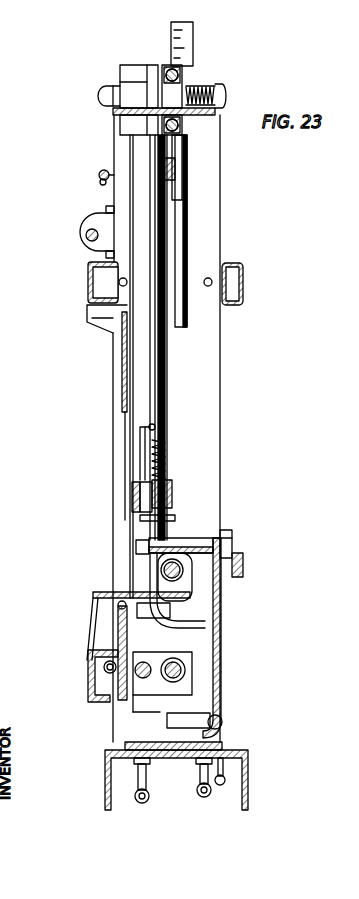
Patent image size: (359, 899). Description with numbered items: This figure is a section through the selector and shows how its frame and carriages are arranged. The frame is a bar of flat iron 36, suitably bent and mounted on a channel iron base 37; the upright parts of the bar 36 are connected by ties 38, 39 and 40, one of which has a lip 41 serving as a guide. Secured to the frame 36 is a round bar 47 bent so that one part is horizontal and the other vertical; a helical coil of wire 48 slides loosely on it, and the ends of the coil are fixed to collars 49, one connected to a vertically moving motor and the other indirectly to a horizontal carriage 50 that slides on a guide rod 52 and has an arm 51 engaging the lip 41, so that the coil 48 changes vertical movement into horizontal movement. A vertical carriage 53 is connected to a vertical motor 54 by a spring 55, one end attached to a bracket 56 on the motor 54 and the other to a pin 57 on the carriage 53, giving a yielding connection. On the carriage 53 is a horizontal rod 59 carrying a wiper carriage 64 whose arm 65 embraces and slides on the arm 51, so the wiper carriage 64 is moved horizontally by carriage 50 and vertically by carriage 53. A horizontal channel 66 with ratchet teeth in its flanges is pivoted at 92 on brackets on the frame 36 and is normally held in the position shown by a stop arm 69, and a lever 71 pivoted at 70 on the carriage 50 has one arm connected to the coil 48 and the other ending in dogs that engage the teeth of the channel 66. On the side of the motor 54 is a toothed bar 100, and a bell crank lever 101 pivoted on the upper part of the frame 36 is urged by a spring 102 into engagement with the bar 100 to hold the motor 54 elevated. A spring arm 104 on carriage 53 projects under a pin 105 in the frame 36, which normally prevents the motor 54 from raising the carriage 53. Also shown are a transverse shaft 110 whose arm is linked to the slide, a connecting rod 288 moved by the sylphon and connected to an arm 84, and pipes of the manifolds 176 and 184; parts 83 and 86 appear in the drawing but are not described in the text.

The bar of flat iron 36 is at (113, 110).
The channel iron base 37 is at (248, 762).
The tie 38 is at (243, 562).
The tie 39 is at (243, 283).
The tie 40 is at (90, 281).
The lip 41 is at (93, 307).
The round bar 47 is at (186, 664).
The helical coil of wire 48 is at (186, 672).
The collars 49 is at (170, 676).
The carriage 50 is at (130, 690).
The arm 51 is at (122, 368).
The guide rod 52 is at (128, 703).
The carriage 53 is at (215, 605).
The motor 54 is at (143, 158).
The spring 55 is at (170, 438).
The bracket 56 is at (140, 434).
The pin 57 is at (178, 545).
The horizontal rod 59 is at (161, 573).
The wiper carriage 64 is at (136, 555).
The arm 65 is at (95, 592).
The horizontal channel 66 is at (88, 687).
The stop arm 69 is at (92, 609).
The pivot 70 is at (150, 705).
The lever 71 is at (144, 724).
The nut 83 is at (102, 184).
The arm 84 is at (98, 175).
The bottom plate 86 is at (222, 754).
The pivot 92 is at (98, 664).
The toothed bar 100 is at (180, 156).
The bell crank lever 101 is at (184, 42).
The spring 102 is at (198, 92).
The spring arm 104 is at (232, 547).
The pin 105 is at (222, 536).
The transverse shaft 110 is at (86, 236).
The manifold 176 is at (214, 704).
The manifold 184 is at (149, 797).
The connecting rod 288 is at (176, 172).